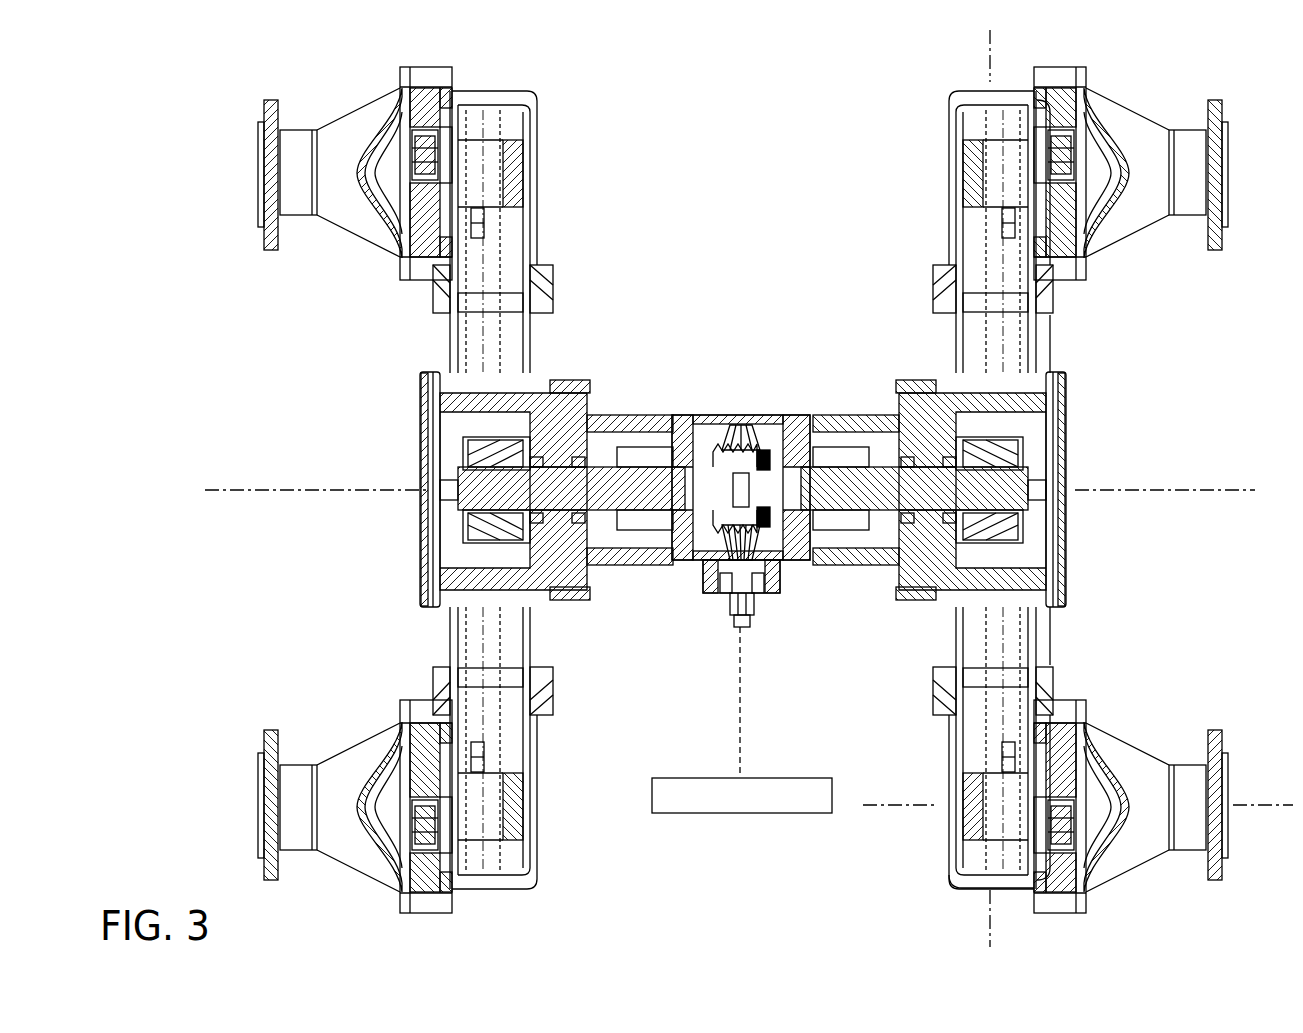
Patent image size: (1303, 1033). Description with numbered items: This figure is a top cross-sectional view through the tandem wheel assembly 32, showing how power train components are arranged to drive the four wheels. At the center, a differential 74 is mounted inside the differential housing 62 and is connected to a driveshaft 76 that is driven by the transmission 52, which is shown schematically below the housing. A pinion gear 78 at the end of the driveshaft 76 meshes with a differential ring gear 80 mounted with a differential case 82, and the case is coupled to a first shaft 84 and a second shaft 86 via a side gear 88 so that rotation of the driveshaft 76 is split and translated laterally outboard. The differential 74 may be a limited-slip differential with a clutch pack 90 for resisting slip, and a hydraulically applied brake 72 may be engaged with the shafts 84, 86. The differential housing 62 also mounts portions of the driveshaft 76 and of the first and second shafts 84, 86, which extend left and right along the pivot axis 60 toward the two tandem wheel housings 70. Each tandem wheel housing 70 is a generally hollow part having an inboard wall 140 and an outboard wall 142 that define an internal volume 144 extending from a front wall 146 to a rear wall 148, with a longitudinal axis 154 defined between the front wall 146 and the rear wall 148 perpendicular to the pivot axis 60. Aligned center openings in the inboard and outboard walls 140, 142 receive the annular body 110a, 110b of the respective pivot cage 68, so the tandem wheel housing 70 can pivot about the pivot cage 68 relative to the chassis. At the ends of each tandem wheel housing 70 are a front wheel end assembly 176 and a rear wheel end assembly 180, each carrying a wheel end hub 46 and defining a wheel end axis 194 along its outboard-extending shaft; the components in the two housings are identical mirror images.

The tandem wheel assembly 32 is at (806, 195).
The wheel end hub 46 is at (258, 236).
The transmission 52 is at (717, 777).
The pivot axis 60 is at (1165, 491).
The differential housing 62 is at (704, 410).
The pivot cage 68 is at (603, 415).
The tandem wheel housing 70 is at (558, 127).
The hydraulically applied brake 72 is at (797, 420).
The differential 74 is at (712, 546).
The driveshaft 76 is at (743, 610).
The pinion gear 78 is at (712, 582).
The differential ring gear 80 is at (767, 568).
The differential case 82 is at (731, 437).
The first shaft 84 is at (836, 484).
The second shaft 86 is at (606, 487).
The side gear 88 is at (708, 562).
The clutch pack 90 is at (766, 437).
The annular body portion 110a is at (726, 562).
The annular body portion 110b is at (758, 582).
The inboard wall 140 is at (953, 644).
The outboard wall 142 is at (1057, 626).
The internal volume 144 is at (1007, 631).
The front wall 146 is at (970, 888).
The rear wall 148 is at (977, 96).
The longitudinal axis 154 is at (990, 913).
The front wheel end assembly 176 is at (1128, 877).
The rear wheel end assembly 180 is at (1137, 91).
The wheel end axis 194 is at (1268, 803).